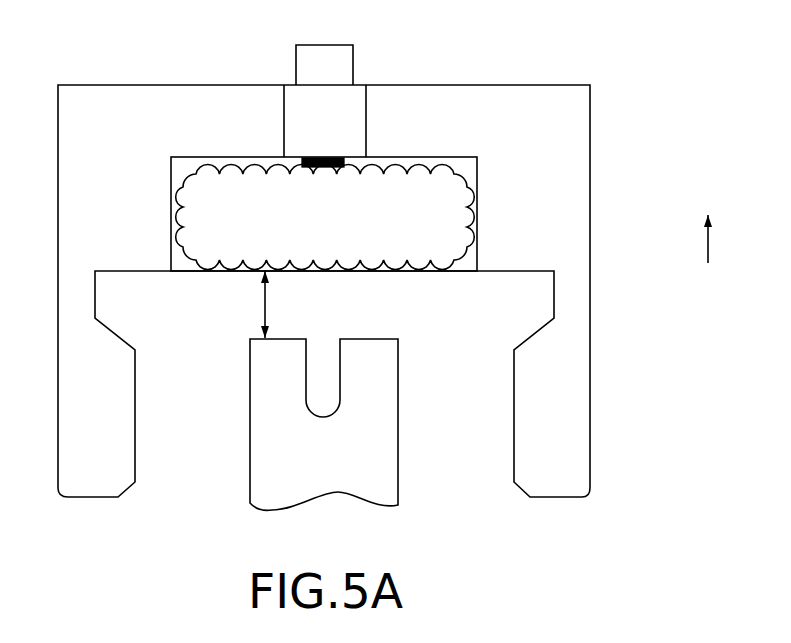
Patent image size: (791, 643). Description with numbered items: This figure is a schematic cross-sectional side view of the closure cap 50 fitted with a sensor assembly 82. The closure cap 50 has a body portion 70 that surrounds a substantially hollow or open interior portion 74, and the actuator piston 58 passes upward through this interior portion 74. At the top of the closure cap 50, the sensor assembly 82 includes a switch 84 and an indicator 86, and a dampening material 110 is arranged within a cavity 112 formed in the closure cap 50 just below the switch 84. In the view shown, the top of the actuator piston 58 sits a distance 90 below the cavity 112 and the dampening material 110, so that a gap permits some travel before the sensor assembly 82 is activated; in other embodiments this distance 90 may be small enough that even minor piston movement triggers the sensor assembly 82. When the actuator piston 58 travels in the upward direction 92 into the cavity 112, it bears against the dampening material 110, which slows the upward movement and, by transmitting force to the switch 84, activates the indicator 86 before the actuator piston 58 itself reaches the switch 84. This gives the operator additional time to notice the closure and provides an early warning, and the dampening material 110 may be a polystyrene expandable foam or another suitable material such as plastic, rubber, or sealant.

The closure cap 50 is at (398, 301).
The actuator piston 58 is at (340, 462).
The body portion 70 is at (590, 420).
The interior portion 74 is at (178, 508).
The sensor assembly 82 is at (382, 123).
The switch 84 is at (300, 158).
The indicator 86 is at (328, 70).
The distance 90 is at (265, 302).
The upward direction 92 is at (723, 243).
The dampening material 110 is at (345, 234).
The cavity 112 is at (462, 176).